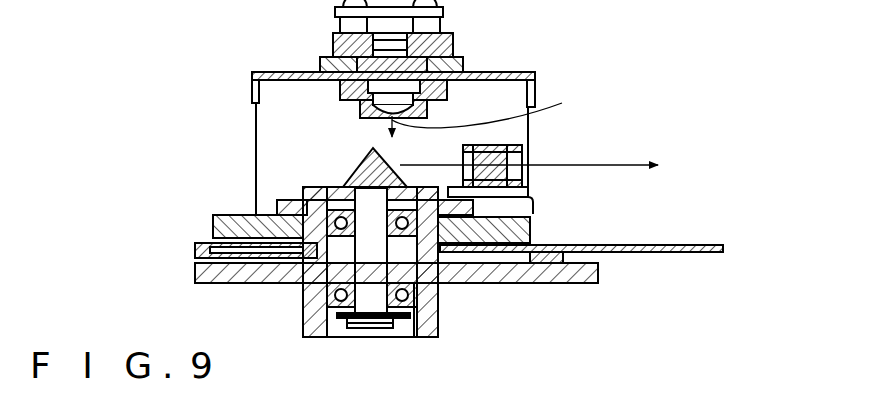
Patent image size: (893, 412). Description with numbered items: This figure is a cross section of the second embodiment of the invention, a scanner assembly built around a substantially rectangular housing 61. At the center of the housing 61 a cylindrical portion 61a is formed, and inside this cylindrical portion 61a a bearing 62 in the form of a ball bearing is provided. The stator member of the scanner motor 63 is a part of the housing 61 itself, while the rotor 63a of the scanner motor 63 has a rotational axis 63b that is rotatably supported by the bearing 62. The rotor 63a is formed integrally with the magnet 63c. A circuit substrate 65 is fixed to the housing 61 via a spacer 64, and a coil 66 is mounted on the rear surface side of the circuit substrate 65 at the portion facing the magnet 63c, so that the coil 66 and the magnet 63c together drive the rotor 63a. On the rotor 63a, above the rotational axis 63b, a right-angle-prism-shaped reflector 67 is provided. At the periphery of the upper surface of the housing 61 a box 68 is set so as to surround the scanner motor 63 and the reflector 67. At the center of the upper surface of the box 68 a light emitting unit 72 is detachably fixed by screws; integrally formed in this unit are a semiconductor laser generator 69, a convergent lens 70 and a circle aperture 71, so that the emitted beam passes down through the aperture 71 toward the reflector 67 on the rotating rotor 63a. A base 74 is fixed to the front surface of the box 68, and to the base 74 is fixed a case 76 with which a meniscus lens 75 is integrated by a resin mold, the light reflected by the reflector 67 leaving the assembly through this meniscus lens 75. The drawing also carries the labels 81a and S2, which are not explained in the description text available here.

The housing 61 is at (592, 278).
The cylindrical portion 61a is at (313, 300).
The bearing 62 is at (425, 297).
The scanner motor 63 is at (448, 295).
The rotor 63a is at (303, 190).
The rotational axis 63b is at (375, 318).
The magnet 63c is at (213, 230).
The spacer 64 is at (195, 258).
The circuit substrate 65 is at (700, 245).
The coil 66 is at (218, 281).
The reflector 67 is at (357, 162).
The box 68 is at (250, 86).
The semiconductor laser generator 69 is at (398, 48).
The convergent lens 70 is at (403, 72).
The circle aperture 71 is at (495, 110).
The light emitting unit 72 is at (320, 57).
The base 74 is at (533, 205).
The meniscus lens 75 is at (522, 175).
The case 76 is at (529, 145).
The housing inner wall 81a is at (303, 297).
The gap S2 is at (232, 281).